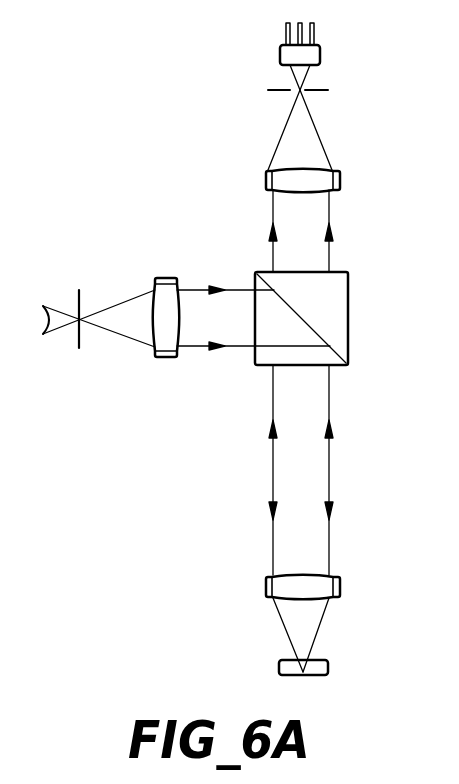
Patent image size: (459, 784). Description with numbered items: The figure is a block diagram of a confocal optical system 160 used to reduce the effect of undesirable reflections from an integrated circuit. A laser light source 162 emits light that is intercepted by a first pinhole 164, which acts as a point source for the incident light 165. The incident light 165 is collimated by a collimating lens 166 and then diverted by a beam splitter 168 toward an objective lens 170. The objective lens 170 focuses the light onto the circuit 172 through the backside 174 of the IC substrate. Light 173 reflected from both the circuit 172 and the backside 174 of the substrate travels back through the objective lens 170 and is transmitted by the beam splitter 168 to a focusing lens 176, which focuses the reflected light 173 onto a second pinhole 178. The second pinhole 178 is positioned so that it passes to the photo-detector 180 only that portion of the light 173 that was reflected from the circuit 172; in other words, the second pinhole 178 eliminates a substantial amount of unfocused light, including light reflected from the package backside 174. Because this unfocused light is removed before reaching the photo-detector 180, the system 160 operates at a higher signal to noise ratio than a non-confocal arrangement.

The system 160 is at (133, 560).
The laser light source 162 is at (58, 333).
The first pinhole 164 is at (78, 289).
The incident light 165 is at (134, 292).
The collimating lens 166 is at (158, 357).
The beam splitter 168 is at (348, 346).
The objective lens 170 is at (338, 579).
The circuit 172 is at (279, 665).
The reflected light 173 is at (270, 435).
The backside of IC substrate 174 is at (313, 660).
The focusing lens 176 is at (340, 172).
The second pinhole 178 is at (283, 93).
The photo-detector 180 is at (287, 55).